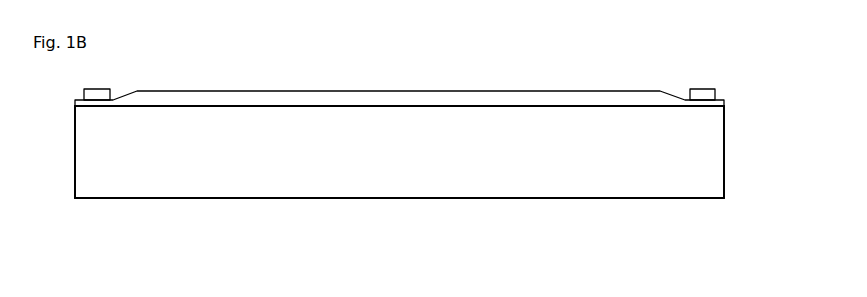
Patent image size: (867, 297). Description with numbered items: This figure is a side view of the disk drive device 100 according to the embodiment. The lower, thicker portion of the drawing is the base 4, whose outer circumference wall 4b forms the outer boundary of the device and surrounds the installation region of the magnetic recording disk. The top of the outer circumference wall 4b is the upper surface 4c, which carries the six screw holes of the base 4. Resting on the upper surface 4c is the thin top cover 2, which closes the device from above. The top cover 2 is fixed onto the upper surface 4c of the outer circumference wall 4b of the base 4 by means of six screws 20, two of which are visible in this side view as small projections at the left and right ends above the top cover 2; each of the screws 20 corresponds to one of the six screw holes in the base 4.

The disk drive device 100 is at (434, 283).
The base 4 is at (724, 163).
The upper surface of the outer circumference wall 4c is at (232, 104).
The outer circumference wall 4b is at (693, 182).
The top cover 2 is at (725, 102).
The screws 20 is at (702, 88).